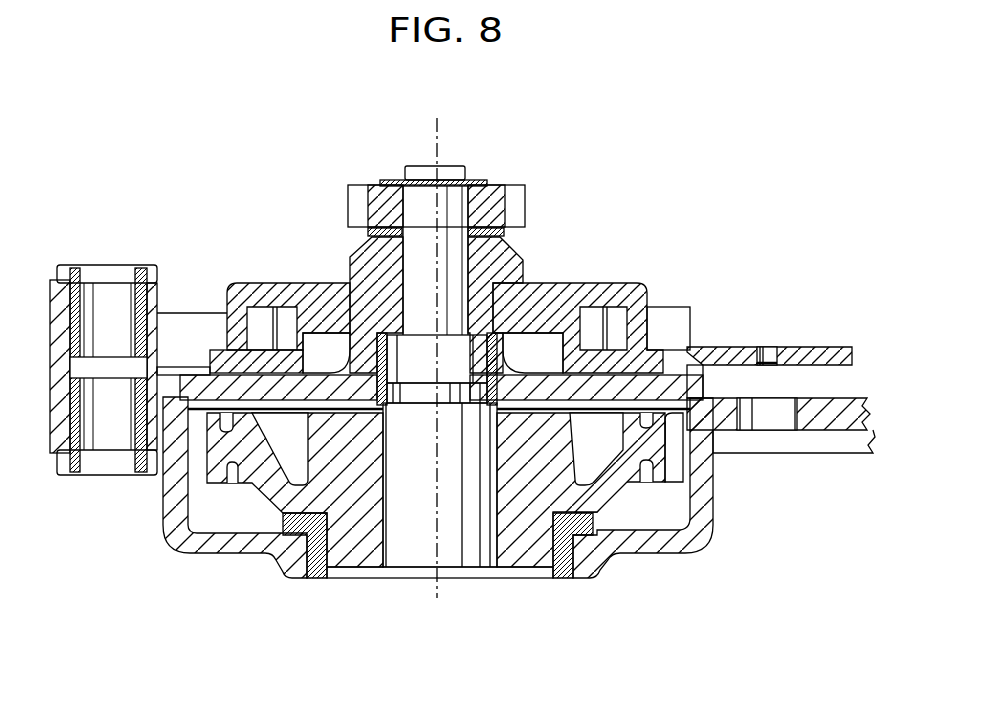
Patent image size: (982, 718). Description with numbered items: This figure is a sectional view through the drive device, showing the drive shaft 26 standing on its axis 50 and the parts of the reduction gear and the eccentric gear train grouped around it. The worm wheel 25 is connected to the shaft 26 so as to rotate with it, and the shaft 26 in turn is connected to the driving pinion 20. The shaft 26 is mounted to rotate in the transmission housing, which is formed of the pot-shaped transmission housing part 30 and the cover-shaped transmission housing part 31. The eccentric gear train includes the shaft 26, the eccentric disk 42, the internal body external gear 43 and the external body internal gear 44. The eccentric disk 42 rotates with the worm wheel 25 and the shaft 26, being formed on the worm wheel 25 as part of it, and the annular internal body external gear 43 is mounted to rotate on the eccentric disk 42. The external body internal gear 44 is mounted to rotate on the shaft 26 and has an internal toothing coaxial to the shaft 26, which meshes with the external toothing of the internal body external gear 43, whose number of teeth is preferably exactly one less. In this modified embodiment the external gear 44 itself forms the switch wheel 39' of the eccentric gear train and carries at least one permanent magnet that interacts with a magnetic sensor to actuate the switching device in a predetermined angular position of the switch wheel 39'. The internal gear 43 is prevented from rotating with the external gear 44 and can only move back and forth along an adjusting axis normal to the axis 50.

The driving pinion 20 is at (488, 197).
The worm wheel 25 is at (523, 518).
The drive shaft 26 is at (447, 207).
The pot-shaped transmission housing part 30 is at (645, 543).
The cover-shaped transmission housing part 31 is at (810, 352).
The eccentric disk 42 is at (383, 295).
The internal body external gear 43 is at (310, 320).
The external body internal gear 44 is at (540, 292).
The switch wheel 39' is at (256, 361).
The axis 50 is at (434, 140).